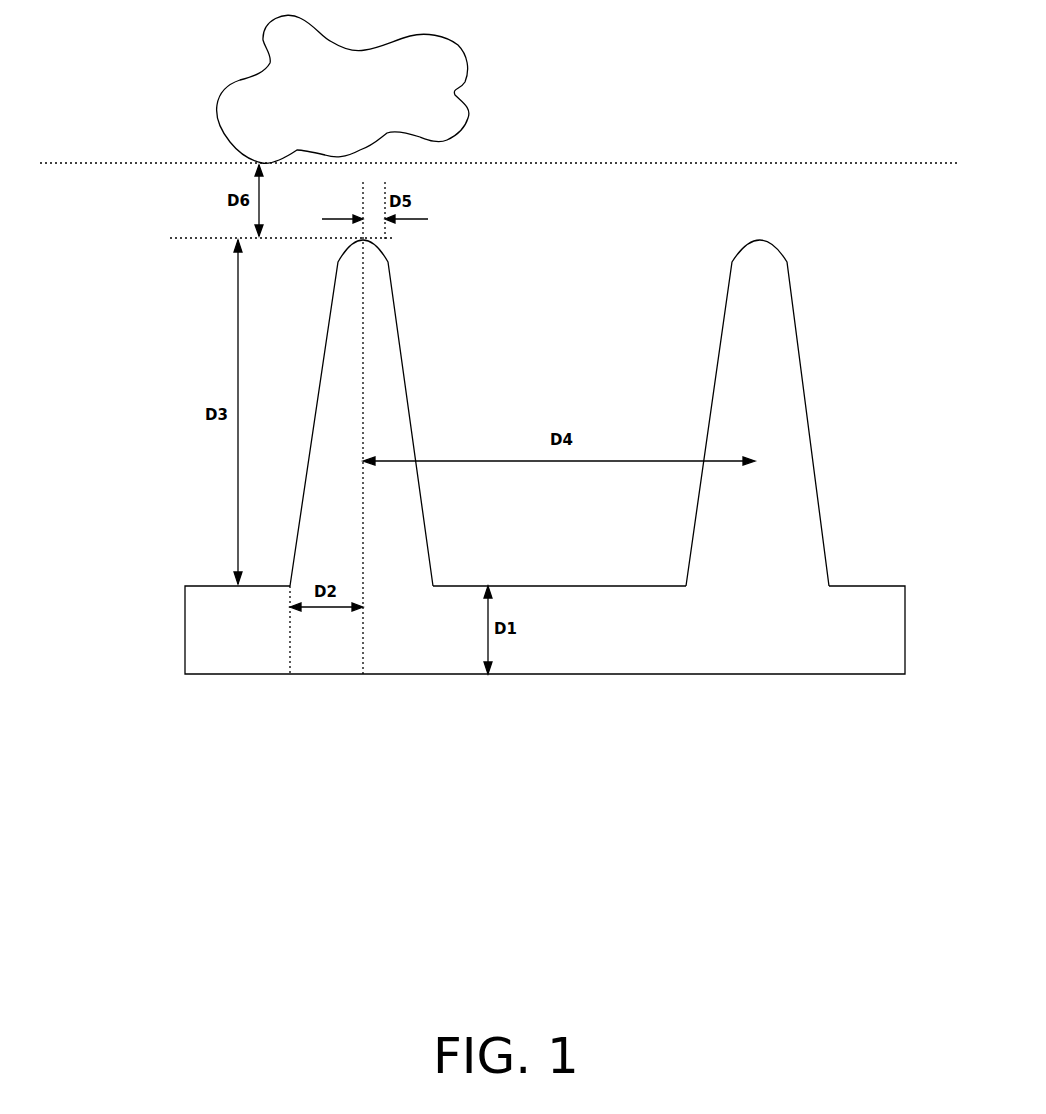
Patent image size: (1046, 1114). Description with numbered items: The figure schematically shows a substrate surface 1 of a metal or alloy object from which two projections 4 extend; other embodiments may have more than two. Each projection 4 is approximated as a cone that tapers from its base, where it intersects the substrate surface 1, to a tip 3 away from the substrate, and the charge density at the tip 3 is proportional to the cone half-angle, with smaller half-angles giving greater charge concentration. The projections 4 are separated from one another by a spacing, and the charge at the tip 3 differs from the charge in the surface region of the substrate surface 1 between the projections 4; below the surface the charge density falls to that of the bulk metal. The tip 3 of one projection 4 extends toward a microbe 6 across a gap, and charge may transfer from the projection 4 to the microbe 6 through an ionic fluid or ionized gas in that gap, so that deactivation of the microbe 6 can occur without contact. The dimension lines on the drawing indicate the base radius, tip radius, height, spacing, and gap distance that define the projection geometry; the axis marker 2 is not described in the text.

The substrate surface 1 is at (445, 620).
The central axis of protrusion 2 is at (363, 383).
The tip 3 is at (365, 259).
The projection 4 is at (468, 341).
The microbe 6 is at (515, 98).